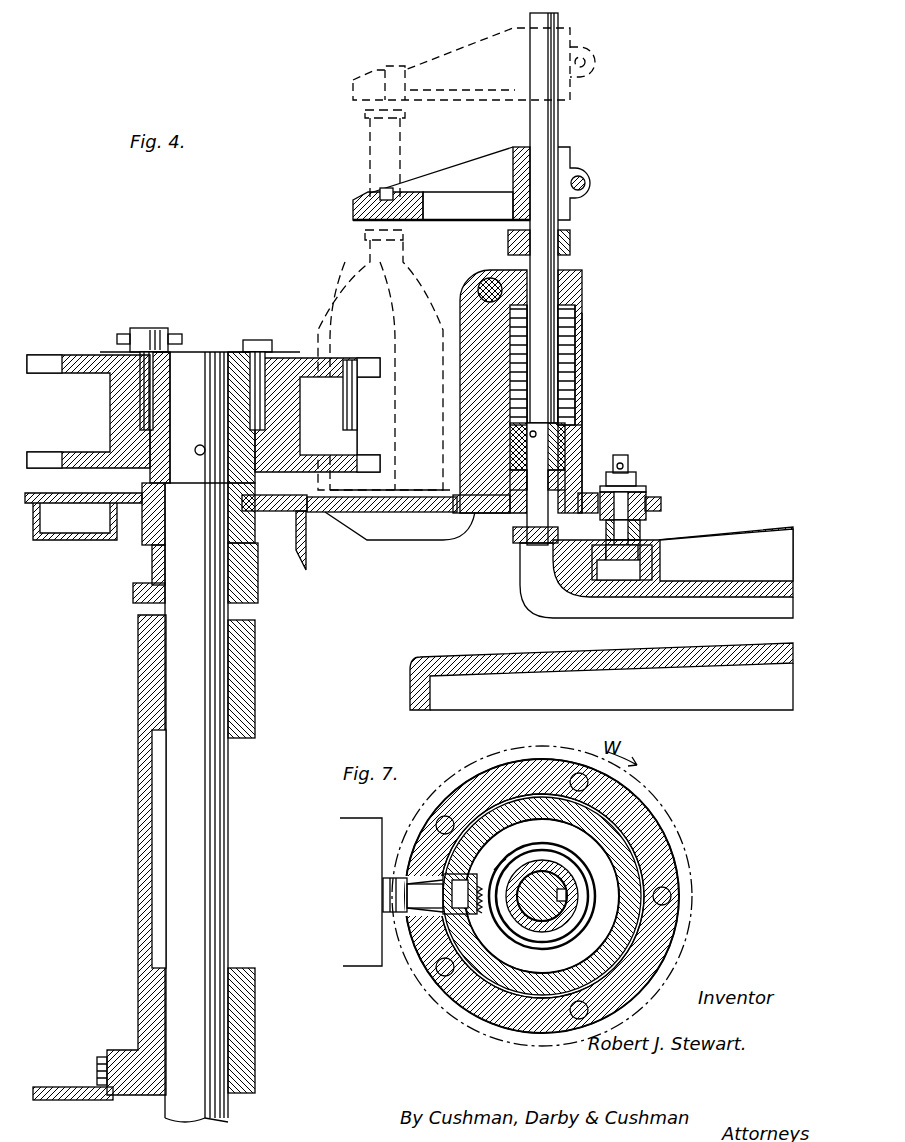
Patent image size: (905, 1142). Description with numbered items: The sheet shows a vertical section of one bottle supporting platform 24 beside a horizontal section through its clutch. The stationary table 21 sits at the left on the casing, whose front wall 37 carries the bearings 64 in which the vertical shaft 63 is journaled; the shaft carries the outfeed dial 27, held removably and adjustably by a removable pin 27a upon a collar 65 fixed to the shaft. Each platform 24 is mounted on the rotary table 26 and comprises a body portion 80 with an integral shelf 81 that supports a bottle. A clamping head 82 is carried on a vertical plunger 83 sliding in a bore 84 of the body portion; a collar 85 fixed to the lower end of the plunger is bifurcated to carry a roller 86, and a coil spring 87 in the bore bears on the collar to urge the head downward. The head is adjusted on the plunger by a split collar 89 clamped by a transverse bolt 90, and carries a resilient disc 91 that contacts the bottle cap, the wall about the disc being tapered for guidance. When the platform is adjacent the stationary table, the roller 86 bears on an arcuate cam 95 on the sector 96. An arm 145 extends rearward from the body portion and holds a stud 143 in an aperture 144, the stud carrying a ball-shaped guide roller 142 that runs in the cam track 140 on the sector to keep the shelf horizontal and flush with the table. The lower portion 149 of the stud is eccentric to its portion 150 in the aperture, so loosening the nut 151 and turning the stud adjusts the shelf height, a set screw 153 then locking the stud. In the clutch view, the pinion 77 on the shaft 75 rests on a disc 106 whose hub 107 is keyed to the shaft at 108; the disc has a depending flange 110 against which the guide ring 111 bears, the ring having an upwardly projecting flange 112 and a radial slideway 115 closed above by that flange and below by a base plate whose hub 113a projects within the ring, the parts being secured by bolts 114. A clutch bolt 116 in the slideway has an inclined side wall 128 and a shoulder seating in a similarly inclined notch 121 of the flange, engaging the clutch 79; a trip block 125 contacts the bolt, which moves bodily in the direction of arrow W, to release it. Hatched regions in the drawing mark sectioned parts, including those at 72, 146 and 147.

In FIG. 4, the stationary table 21 is at (140, 510).
In FIG. 4, the bottle supporting platform 24 is at (473, 377).
In FIG. 4, the rotary table 26 is at (465, 657).
In FIG. 4, the outfeed dial 27 is at (290, 357).
In FIG. 4, the removable pin 27a is at (147, 333).
In FIG. 4, the front wall 37 is at (142, 800).
In FIG. 4, the vertical shaft 63 is at (208, 890).
In FIG. 4, the bearing 64 is at (253, 677).
In FIG. 4, the collar 65 is at (167, 393).
In FIG. 4, the pivot hole 72 is at (490, 272).
In FIG. 7, the shaft 75 is at (535, 915).
In FIG. 7, the pinion 77 is at (681, 932).
In FIG. 7, the clutch 79 is at (633, 800).
In FIG. 4, the body portion 80 is at (573, 390).
In FIG. 4, the shelf 81 is at (398, 515).
In FIG. 4, the clamping head 82 is at (412, 78).
In FIG. 4, the plunger 83 is at (553, 167).
In FIG. 4, the bore 84 is at (568, 367).
In FIG. 4, the collar 85 is at (583, 412).
In FIG. 4, the roller 86 is at (542, 493).
In FIG. 4, the coil spring 87 is at (583, 323).
In FIG. 4, the split collar 89 is at (580, 175).
In FIG. 4, the transverse bolt 90 is at (588, 185).
In FIG. 4, the resilient disc 91 is at (365, 192).
In FIG. 4, the arcuate cam 95 is at (525, 542).
In FIG. 4, the sector 96 is at (727, 545).
In FIG. 7, the disc 106 is at (626, 840).
In FIG. 7, the hub 107 is at (568, 930).
In FIG. 7, the key 108 is at (638, 880).
In FIG. 7, the depending flange 110 is at (500, 783).
In FIG. 7, the guide ring 111 is at (603, 916).
In FIG. 7, the upwardly projecting flange 112 is at (428, 947).
In FIG. 7, the hub 113a is at (528, 853).
In FIG. 7, the bolt 114 is at (441, 976).
In FIG. 7, the slideway 115 is at (395, 884).
In FIG. 7, the clutch bolt 116 is at (385, 878).
In FIG. 7, the notch 121 is at (494, 870).
In FIG. 7, the trip block 125 is at (355, 818).
In FIG. 7, the side wall 128 is at (435, 918).
In FIG. 4, the cam track 140 is at (620, 575).
In FIG. 4, the guide roller 142 is at (640, 543).
In FIG. 4, the stud 143 is at (635, 474).
In FIG. 4, the aperture 144 is at (640, 490).
In FIG. 4, the arm 145 is at (583, 500).
In FIG. 4, the valve base 146 is at (656, 553).
In FIG. 4, the passage 147 is at (570, 555).
In FIG. 4, the eccentric portion 149 is at (640, 525).
In FIG. 4, the stud portion 150 is at (642, 482).
In FIG. 4, the nut 151 is at (624, 467).
In FIG. 4, the set screw 153 is at (661, 503).